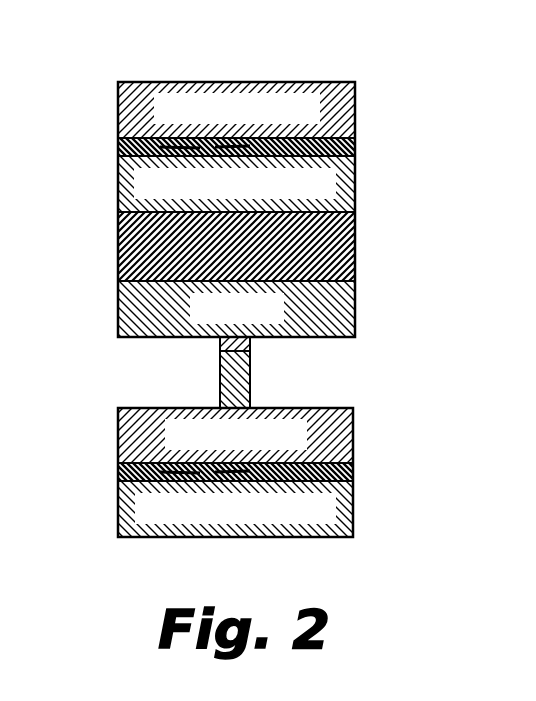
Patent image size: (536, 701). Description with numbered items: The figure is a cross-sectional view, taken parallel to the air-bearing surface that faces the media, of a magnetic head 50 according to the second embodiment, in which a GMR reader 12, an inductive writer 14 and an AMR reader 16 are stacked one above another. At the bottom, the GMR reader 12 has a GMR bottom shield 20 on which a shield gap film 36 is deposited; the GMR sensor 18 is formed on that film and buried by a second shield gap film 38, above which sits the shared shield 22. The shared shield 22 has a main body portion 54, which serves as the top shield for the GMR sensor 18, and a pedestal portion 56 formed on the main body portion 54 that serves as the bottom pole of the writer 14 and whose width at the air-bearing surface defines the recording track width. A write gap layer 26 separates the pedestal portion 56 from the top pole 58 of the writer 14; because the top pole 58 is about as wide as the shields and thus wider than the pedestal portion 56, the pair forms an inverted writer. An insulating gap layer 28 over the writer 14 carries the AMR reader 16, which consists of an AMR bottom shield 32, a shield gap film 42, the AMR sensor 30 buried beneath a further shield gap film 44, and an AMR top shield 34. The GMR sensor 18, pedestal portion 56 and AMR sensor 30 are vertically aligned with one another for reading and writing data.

The magnetic head 50 is at (305, 48).
The AMR reader 16 is at (48, 82).
The AMR top shield 34 is at (355, 104).
The shield gap film 42 is at (273, 151).
The shield gap film 44 is at (355, 149).
The AMR sensor 30 is at (178, 140).
The AMR bottom shield 32 is at (355, 185).
The insulating gap layer 28 is at (355, 244).
The writer 14 is at (75, 285).
The top pole 58 is at (355, 308).
The shared shield 22 is at (403, 348).
The write gap layer 26 is at (254, 345).
The pedestal portion 56 is at (250, 392).
The GMR reader 12 is at (96, 408).
The main body portion 54 is at (335, 408).
The shield gap film 36 is at (273, 475).
The shield gap film 38 is at (353, 473).
The GMR sensor 18 is at (152, 463).
The GMR bottom shield 20 is at (353, 511).